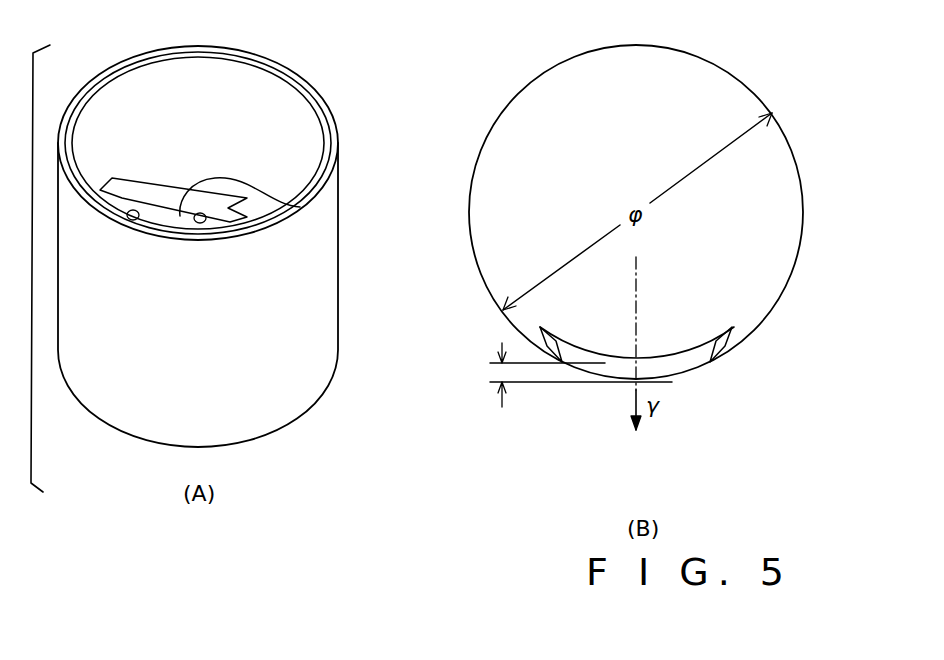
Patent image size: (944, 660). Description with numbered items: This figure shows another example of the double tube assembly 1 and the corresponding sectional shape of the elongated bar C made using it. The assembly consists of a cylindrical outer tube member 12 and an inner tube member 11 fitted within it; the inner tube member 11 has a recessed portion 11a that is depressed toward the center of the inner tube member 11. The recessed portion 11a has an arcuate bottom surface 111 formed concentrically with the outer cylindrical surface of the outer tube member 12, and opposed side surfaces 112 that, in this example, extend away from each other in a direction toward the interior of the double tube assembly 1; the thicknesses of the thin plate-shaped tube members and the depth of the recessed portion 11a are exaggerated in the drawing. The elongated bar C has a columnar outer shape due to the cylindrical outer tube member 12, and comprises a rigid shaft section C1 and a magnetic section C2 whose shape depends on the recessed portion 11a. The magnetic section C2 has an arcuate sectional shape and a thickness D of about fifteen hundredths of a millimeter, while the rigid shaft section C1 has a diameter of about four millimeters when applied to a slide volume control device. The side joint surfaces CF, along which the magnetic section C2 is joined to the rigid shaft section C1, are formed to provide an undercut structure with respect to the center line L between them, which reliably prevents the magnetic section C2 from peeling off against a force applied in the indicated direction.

The double tube assembly 1 is at (239, 246).
The inner tube member 11 is at (303, 138).
The recessed portion 11a is at (300, 207).
The arcuate bottom surface 111 is at (162, 212).
The opposed side surfaces 112 is at (134, 219).
The outer tube member 12 is at (322, 270).
The elongated bar C is at (753, 88).
The rigid shaft section C1 is at (757, 297).
The magnetic section C2 is at (690, 362).
The side joint surfaces CF is at (541, 329).
The thickness D is at (502, 375).
The center line L is at (641, 282).